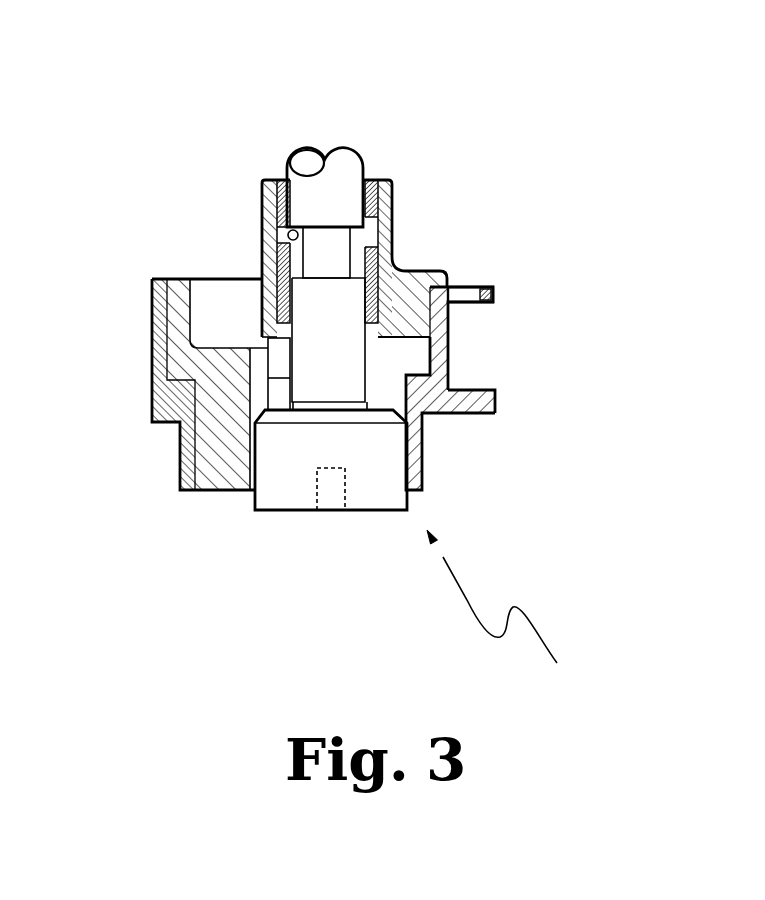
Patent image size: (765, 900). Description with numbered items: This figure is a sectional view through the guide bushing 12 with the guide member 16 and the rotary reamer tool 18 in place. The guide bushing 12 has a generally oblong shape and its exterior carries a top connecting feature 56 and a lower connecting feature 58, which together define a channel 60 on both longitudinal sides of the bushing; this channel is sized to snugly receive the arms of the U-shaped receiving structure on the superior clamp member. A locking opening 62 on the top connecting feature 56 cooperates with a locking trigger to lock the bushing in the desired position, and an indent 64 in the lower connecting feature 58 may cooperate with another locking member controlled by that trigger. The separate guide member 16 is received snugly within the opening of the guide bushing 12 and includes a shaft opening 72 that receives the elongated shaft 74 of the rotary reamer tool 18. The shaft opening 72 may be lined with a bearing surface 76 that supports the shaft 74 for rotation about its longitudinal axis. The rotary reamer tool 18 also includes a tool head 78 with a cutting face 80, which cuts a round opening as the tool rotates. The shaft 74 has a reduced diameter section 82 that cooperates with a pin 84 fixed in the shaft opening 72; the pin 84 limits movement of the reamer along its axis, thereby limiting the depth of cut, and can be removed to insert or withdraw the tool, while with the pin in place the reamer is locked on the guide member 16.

The guide bushing 12 is at (145, 412).
The guide member 16 is at (218, 460).
The rotary reamer tool 18 is at (507, 615).
The top connecting feature 56 is at (467, 303).
The lower connecting feature 58 is at (465, 413).
The channel 60 is at (448, 340).
The locking opening 62 is at (482, 288).
The indent 64 is at (480, 387).
The shaft opening 72 is at (273, 179).
The elongated shaft 74 is at (340, 188).
The bearing surface 76 is at (279, 179).
The tool head 78 is at (293, 490).
The cutting face 80 is at (337, 510).
The reduced diameter section 82 is at (333, 253).
The pin 84 is at (288, 233).